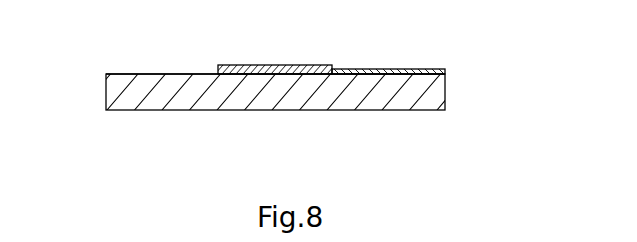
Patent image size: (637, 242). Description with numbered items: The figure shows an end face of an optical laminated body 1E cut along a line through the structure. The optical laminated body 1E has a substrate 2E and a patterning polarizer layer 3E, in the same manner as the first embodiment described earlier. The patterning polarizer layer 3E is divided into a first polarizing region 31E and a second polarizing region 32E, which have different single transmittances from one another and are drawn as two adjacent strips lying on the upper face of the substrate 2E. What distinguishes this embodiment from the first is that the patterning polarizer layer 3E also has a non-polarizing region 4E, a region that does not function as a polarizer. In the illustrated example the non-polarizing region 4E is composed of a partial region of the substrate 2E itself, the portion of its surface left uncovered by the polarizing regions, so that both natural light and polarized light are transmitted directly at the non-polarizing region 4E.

The optical laminated body 1E is at (293, 105).
The substrate 2E is at (145, 111).
The patterning polarizer layer 3E is at (351, 48).
The first polarizing region 31E is at (270, 65).
The second polarizing region 32E is at (385, 69).
The non-polarizing region 4E is at (153, 73).